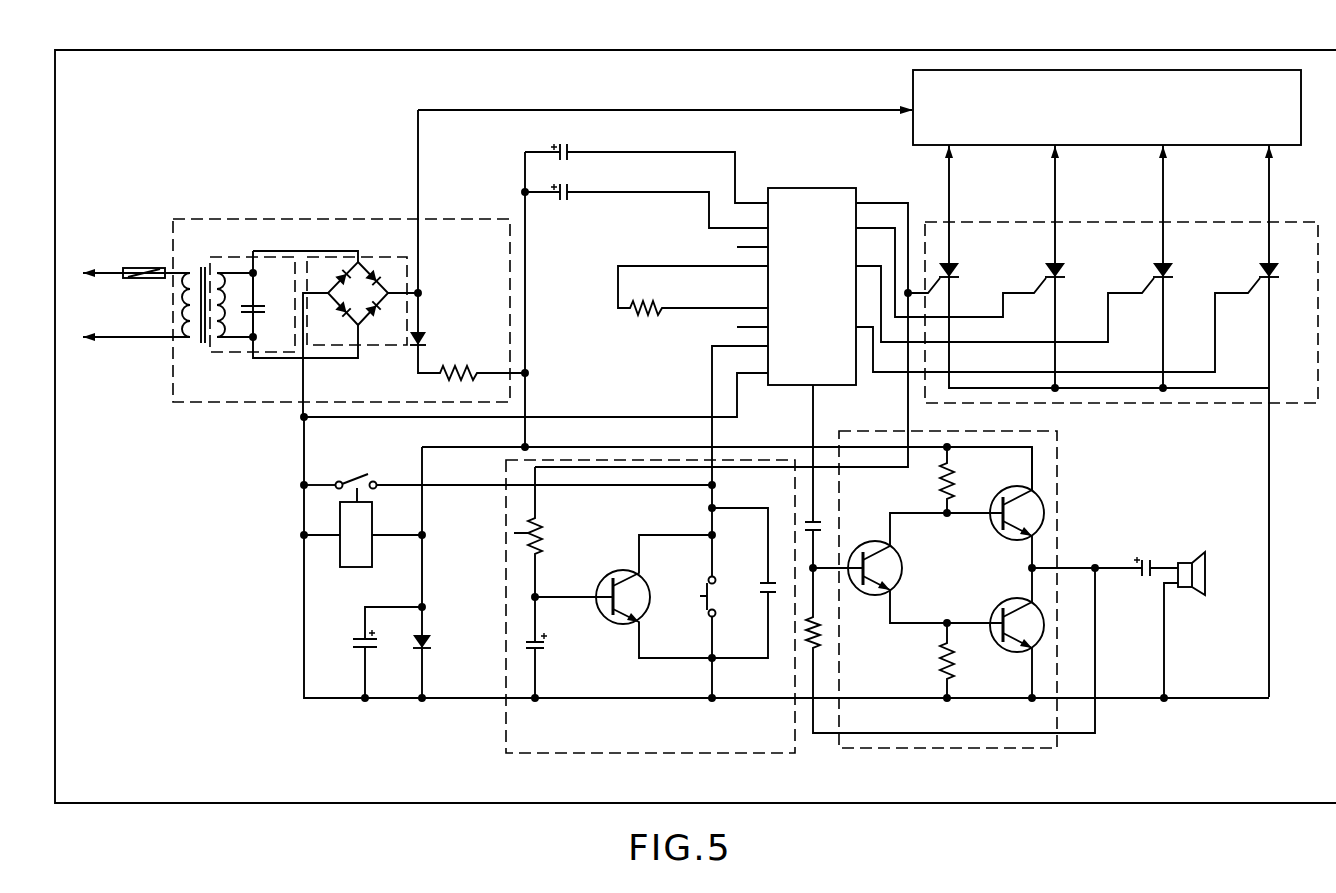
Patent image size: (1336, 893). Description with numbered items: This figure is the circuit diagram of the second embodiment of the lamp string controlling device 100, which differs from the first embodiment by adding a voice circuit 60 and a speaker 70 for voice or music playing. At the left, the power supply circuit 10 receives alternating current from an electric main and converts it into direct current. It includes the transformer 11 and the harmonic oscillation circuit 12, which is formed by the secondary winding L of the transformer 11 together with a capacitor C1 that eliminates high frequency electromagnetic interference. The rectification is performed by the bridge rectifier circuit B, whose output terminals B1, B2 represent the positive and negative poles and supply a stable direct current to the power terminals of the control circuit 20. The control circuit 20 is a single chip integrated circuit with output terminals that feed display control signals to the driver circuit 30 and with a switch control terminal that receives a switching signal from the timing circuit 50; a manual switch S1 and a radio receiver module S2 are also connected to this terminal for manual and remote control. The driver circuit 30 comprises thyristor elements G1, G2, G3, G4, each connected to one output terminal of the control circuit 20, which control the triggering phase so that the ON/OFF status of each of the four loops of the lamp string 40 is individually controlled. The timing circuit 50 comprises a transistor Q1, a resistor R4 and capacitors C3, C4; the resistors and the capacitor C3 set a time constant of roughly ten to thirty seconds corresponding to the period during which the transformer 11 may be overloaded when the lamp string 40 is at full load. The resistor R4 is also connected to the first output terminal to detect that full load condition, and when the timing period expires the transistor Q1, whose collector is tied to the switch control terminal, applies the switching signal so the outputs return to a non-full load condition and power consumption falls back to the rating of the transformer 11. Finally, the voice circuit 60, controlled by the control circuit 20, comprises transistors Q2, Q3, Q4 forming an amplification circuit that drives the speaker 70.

The lamp string controlling device 100 is at (383, 48).
The power supply circuit 10 is at (170, 232).
The transformer 11 is at (200, 280).
The harmonic oscillation circuit 12 is at (220, 352).
The control circuit 20 is at (818, 188).
The driver circuit 30 is at (1290, 217).
The lamp string 40 is at (1107, 107).
The timing circuit 50 is at (619, 753).
The voice circuit 60 is at (1057, 460).
The speaker 70 is at (1203, 577).
The bridge rectifier circuit B is at (357, 323).
The positive output terminal B1 is at (371, 280).
The negative output terminal B2 is at (349, 319).
The secondary winding L is at (225, 310).
The capacitor C1 is at (265, 305).
The resistor R4 is at (545, 532).
The capacitor C3 is at (551, 647).
The capacitor C4 is at (744, 583).
The transistor Q1 is at (623, 596).
The transistor Q2 is at (880, 568).
The transistor Q3 is at (995, 507).
The transistor Q4 is at (995, 633).
The manual switch S1 is at (698, 626).
The radio receiver module S2 is at (348, 518).
The thyristor element G1 is at (964, 273).
The thyristor element G2 is at (1071, 273).
The thyristor element G3 is at (1179, 273).
The thyristor element G4 is at (1284, 273).